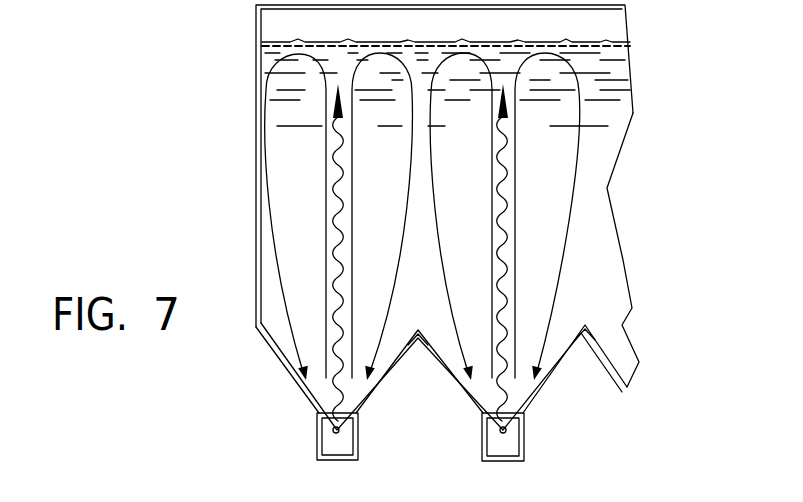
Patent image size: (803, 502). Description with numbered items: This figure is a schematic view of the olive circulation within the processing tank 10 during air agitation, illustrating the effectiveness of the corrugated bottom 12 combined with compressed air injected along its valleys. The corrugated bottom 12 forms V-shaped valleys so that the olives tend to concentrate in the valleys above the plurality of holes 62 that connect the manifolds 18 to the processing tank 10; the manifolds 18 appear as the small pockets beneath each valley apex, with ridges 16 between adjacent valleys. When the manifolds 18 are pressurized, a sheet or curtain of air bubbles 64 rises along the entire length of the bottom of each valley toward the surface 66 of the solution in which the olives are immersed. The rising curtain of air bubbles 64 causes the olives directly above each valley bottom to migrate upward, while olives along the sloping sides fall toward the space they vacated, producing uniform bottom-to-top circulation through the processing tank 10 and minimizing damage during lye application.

The processing tank 10 is at (240, 228).
The corrugated bottom 12 is at (580, 412).
The hopper ridge 16 is at (430, 313).
The manifolds 18 is at (318, 452).
The holes 62 is at (336, 437).
The air bubbles 64 is at (332, 101).
The surface 66 is at (578, 42).